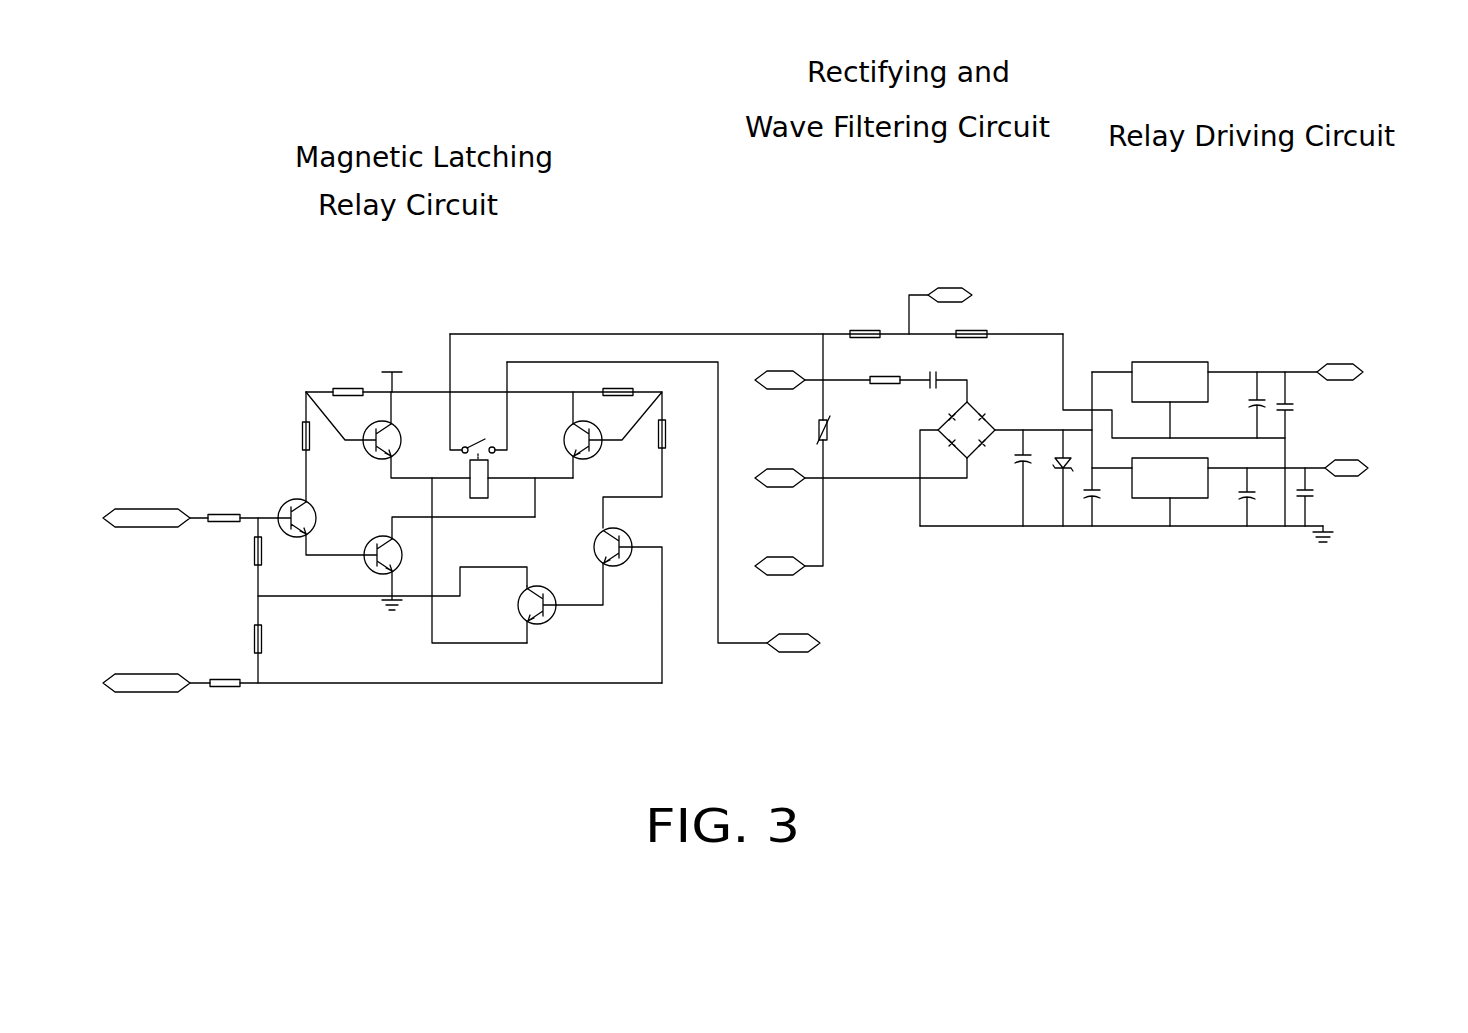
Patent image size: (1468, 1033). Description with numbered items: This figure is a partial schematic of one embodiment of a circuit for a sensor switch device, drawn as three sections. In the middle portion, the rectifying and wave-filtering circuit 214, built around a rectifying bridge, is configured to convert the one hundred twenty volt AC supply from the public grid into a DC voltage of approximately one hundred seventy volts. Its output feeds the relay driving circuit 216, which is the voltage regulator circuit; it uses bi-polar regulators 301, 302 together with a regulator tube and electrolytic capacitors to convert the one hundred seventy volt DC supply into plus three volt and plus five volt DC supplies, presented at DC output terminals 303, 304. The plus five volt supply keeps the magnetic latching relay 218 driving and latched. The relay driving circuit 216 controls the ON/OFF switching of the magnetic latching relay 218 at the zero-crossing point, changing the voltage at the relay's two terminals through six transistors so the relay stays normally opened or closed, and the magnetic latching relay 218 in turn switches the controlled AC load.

The magnetic latching relay 218 is at (704, 325).
The rectifying and wave-filtering circuit 214 is at (1063, 280).
The relay driving circuit 216 is at (1425, 258).
The regulator 302 is at (1195, 360).
The regulator 301 is at (1149, 510).
The DC output terminal 303 is at (1338, 362).
The DC output terminal 304 is at (1369, 470).